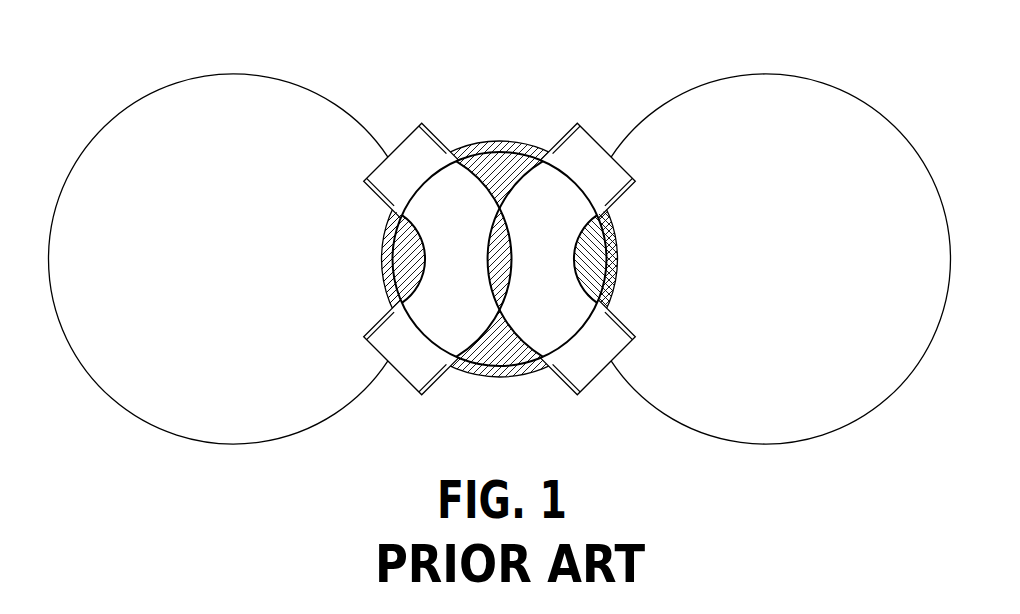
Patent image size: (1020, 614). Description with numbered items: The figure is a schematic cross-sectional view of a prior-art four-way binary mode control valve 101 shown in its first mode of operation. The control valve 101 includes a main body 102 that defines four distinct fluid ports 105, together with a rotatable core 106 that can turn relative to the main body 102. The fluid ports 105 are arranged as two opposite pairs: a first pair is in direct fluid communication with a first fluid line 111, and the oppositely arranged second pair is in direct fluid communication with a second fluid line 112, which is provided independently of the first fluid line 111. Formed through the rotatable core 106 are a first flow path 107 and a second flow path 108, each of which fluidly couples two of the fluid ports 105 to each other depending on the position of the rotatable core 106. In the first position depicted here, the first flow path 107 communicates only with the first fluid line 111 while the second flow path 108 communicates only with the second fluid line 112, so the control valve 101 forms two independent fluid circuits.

The control valve 101 is at (499, 245).
The main body 102 is at (500, 377).
The fluid ports 105 is at (410, 134).
The rotatable core 106 is at (512, 160).
The first flow path 107 is at (437, 270).
The second flow path 108 is at (520, 268).
The first fluid line 111 is at (230, 74).
The second fluid line 112 is at (767, 74).